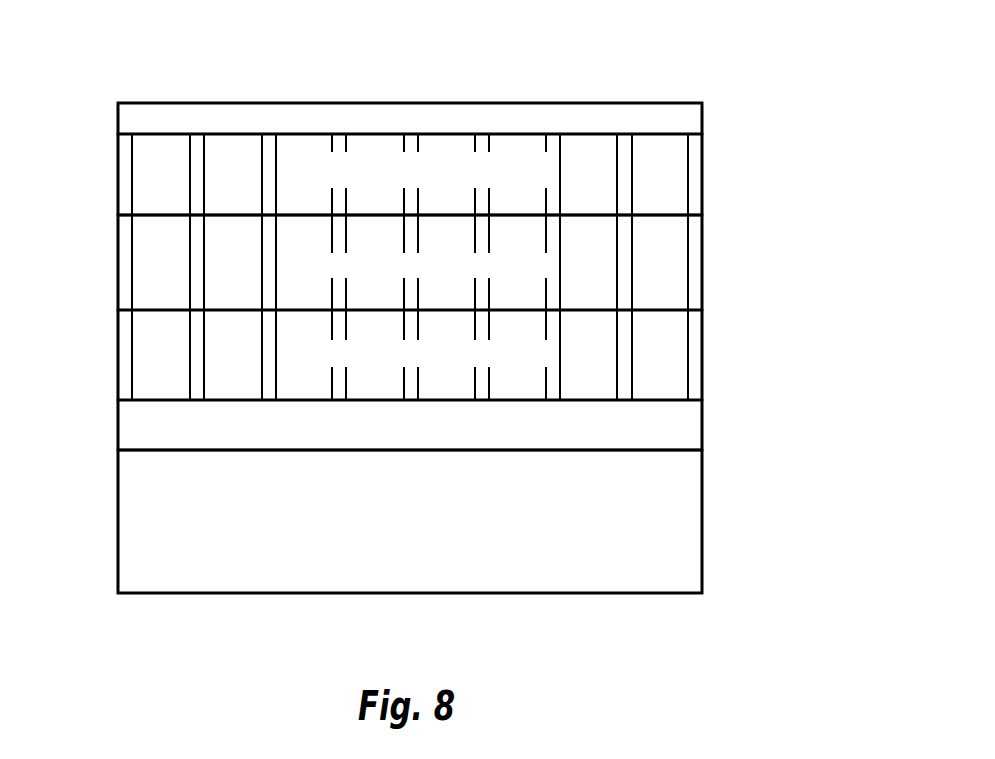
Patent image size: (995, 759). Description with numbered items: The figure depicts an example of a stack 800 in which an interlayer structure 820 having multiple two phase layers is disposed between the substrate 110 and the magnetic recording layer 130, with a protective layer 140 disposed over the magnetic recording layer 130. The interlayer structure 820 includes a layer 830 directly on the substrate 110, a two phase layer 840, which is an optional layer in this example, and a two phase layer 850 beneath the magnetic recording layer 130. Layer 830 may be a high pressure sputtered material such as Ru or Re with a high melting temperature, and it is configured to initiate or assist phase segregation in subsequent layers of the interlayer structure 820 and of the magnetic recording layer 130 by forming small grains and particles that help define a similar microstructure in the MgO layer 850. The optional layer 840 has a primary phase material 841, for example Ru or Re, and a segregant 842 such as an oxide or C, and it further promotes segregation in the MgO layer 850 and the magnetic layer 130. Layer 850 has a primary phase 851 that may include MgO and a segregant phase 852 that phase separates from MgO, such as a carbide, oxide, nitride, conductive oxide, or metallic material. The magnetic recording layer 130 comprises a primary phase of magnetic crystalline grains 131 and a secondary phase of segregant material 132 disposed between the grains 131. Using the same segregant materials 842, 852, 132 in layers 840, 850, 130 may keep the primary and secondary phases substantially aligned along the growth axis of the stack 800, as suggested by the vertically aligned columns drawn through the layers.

The stack 800 is at (368, 88).
The protective layer 140 is at (698, 121).
The magnetic recording layer 130 is at (703, 169).
The magnetic crystalline grains 131 is at (148, 163).
The segregant material 132 is at (127, 167).
The interlayer structure 820 is at (753, 213).
The two phase layer 850 is at (703, 259).
The primary phase 851 is at (140, 267).
The segregant phase 852 is at (127, 266).
The two phase layer 840 is at (703, 333).
The primary phase material 841 is at (140, 368).
The segregant 842 is at (127, 366).
The layer 830 is at (703, 414).
The substrate 110 is at (688, 522).